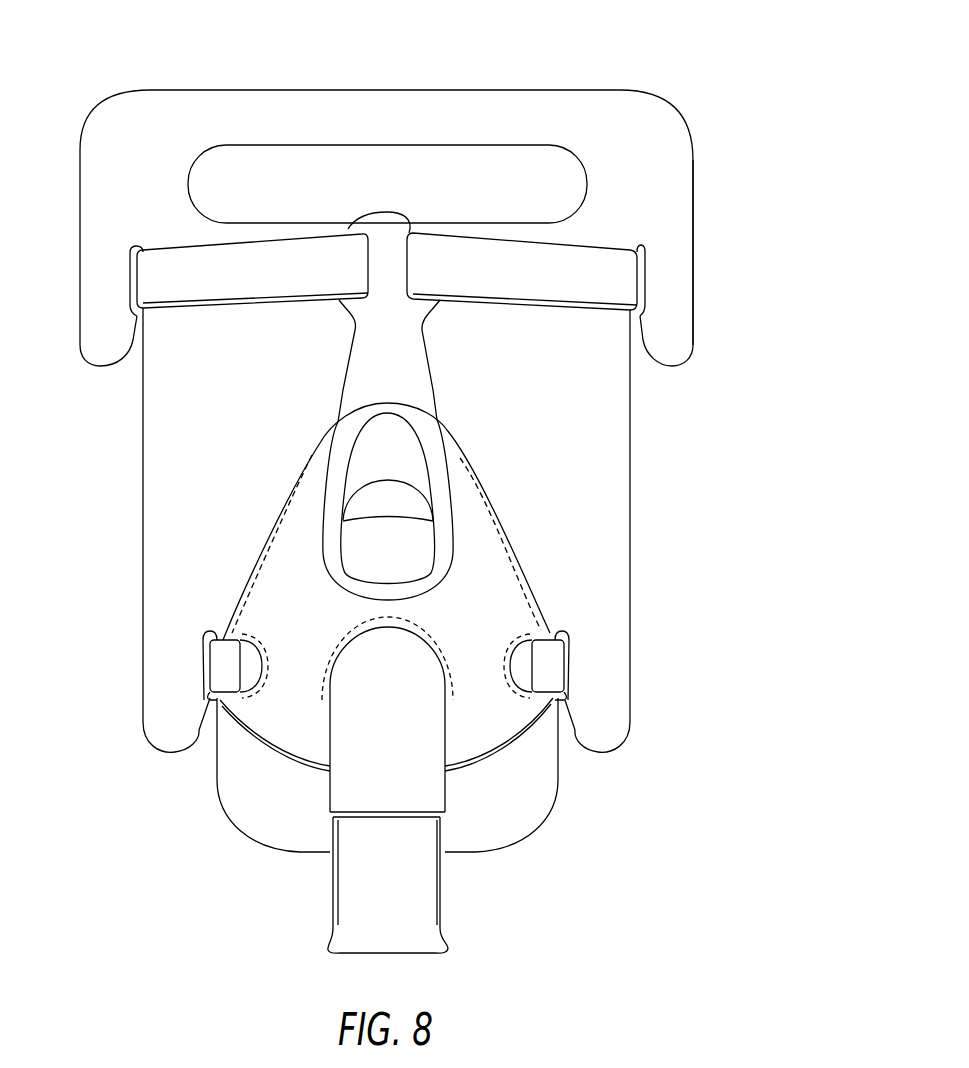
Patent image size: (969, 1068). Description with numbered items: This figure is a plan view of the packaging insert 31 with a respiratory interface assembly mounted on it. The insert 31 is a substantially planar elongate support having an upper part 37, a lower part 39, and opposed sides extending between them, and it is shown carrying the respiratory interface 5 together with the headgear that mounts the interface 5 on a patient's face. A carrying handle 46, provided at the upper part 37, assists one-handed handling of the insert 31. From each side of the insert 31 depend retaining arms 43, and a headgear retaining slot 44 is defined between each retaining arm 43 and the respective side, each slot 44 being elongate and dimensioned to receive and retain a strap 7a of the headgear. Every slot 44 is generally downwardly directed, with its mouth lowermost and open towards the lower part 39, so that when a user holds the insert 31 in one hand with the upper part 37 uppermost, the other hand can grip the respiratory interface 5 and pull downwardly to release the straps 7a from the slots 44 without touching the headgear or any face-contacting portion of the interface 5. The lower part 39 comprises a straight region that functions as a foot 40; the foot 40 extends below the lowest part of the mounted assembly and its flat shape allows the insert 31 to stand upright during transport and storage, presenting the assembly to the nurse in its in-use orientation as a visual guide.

The respiratory interface 5 is at (280, 558).
The strap 7a is at (490, 263).
The insert 31 is at (695, 213).
The upper part 37 is at (662, 122).
The lower part 39 is at (513, 823).
The foot 40 is at (317, 855).
The retaining arm 43 is at (100, 320).
The headgear retaining slot 44 is at (645, 300).
The carrying handle 46 is at (375, 168).